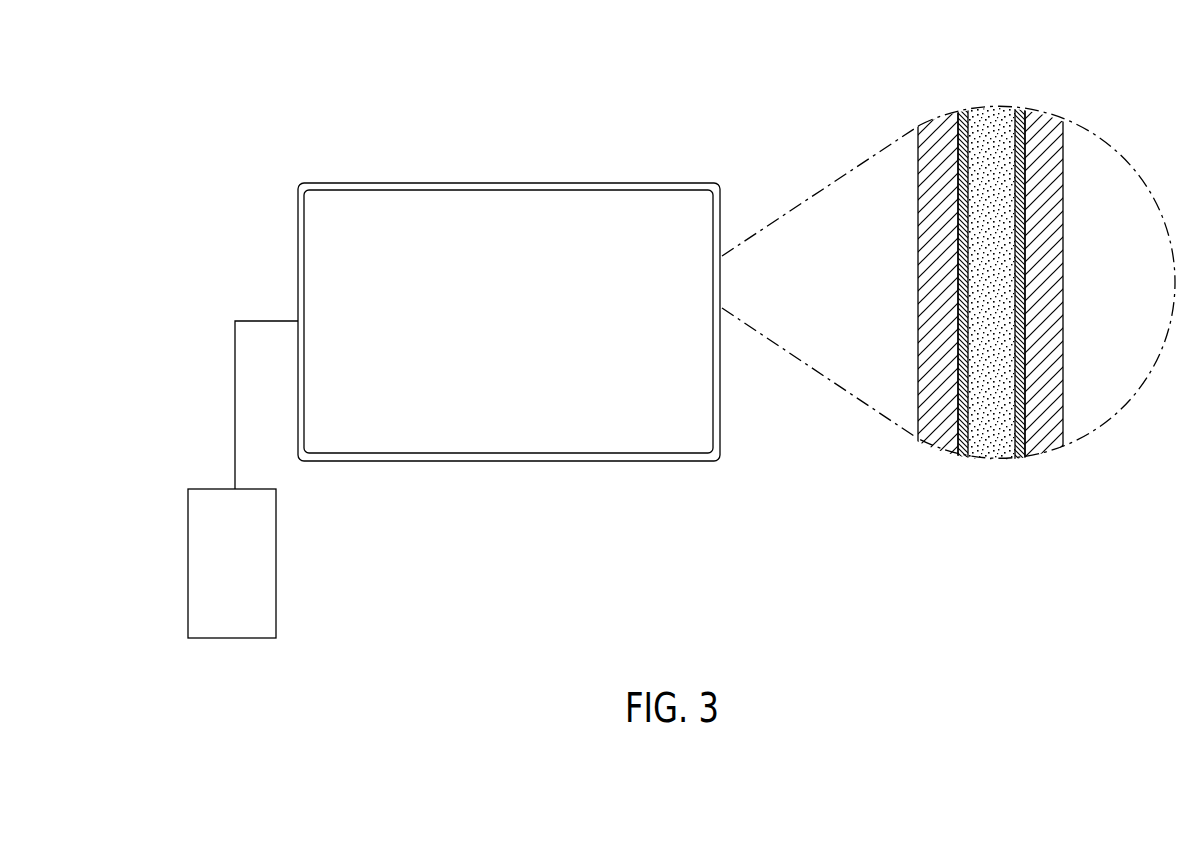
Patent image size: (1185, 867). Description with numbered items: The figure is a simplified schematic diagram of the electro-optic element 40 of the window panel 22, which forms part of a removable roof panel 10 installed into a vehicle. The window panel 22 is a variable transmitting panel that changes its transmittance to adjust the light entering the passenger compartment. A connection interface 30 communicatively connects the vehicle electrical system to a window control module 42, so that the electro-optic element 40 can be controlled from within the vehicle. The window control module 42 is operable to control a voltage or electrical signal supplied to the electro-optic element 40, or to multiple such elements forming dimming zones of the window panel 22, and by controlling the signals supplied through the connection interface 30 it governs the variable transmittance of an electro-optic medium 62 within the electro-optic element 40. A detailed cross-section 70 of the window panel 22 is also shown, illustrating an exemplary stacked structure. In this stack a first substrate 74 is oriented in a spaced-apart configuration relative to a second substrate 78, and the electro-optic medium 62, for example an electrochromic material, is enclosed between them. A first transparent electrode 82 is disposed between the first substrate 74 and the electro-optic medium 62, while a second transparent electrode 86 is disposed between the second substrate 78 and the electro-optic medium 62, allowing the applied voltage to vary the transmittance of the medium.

The roof panel 10 is at (347, 79).
The window panel 22 is at (336, 177).
The electro-optic element 40 is at (543, 213).
The connection interface 30 is at (234, 420).
The window control module 42 is at (221, 616).
The detailed cross-section 70 is at (809, 177).
The first substrate 74 is at (938, 201).
The first transparent electrode 82 is at (960, 257).
The electro-optic medium 62 is at (982, 316).
The second transparent electrode 86 is at (1020, 316).
The second substrate 78 is at (1043, 264).